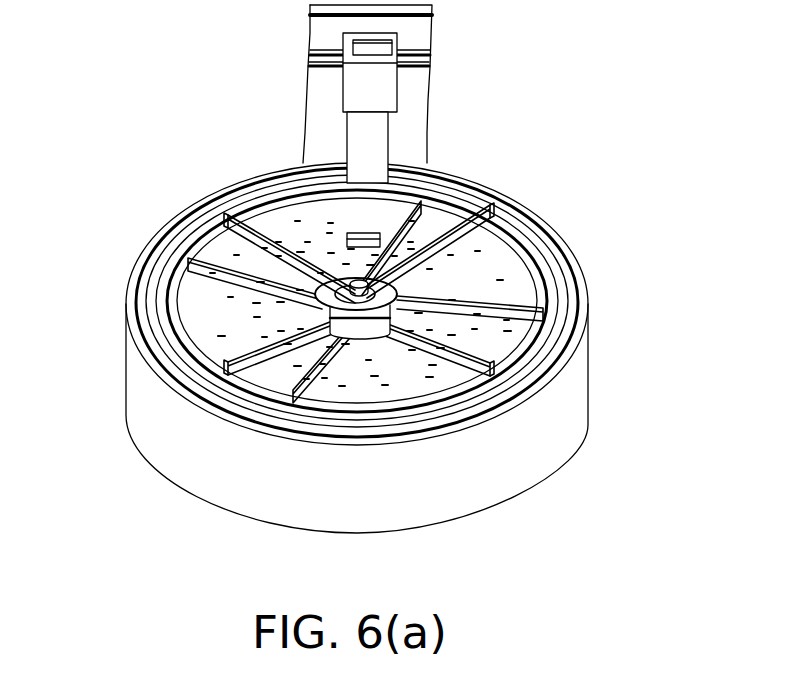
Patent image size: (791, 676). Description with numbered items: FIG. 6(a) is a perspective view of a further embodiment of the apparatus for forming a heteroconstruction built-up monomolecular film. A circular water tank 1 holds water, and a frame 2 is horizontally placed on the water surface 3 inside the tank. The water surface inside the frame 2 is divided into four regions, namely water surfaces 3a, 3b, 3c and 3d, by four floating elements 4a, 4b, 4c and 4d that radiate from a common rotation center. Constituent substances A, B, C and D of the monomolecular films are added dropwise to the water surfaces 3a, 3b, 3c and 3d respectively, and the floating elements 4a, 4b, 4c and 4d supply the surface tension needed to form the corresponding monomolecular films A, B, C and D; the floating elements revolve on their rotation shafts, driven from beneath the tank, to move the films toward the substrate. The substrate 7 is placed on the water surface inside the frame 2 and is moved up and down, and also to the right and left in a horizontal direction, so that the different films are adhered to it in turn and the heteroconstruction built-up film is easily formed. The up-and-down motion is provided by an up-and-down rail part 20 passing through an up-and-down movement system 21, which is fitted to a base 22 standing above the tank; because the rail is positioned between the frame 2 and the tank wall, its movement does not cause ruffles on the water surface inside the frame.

The water tank 1 is at (587, 392).
The frame 2 is at (450, 183).
The water surface 3 is at (568, 316).
The water surface region 3a is at (398, 210).
The water surface region 3b is at (507, 262).
The water surface region 3c is at (453, 392).
The water surface region 3d is at (183, 303).
The floating element 4a is at (513, 195).
The floating element 4b is at (498, 372).
The floating element 4c is at (248, 372).
The floating element 4d is at (232, 214).
The substrate 7 is at (350, 233).
The up-and-down rail part 20 is at (355, 153).
The up-and-down movement system 21 is at (345, 96).
The base 22 is at (313, 35).